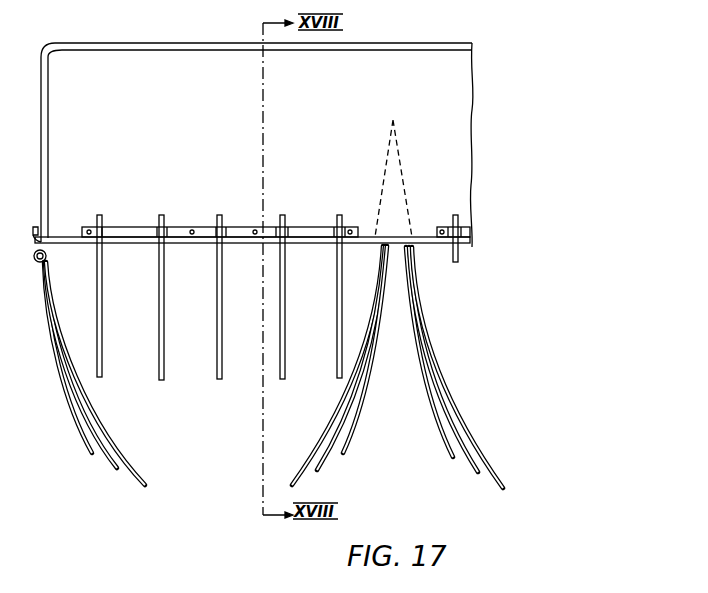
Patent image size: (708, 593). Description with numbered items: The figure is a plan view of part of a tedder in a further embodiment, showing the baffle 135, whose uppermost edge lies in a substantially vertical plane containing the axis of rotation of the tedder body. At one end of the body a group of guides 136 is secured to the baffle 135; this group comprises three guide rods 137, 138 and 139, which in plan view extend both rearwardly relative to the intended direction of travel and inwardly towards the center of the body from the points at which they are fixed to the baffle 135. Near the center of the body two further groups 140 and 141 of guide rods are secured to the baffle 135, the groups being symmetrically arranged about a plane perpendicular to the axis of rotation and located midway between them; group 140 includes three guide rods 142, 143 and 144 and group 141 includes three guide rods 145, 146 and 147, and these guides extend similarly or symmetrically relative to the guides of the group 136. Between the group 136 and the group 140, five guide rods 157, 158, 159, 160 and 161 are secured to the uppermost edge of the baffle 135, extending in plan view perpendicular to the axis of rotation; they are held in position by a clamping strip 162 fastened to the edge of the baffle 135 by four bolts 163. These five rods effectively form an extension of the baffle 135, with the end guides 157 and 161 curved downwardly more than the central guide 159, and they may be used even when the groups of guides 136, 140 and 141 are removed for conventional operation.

The baffle 135 is at (470, 158).
The group of guides 136 is at (114, 381).
The guide rod 137 is at (149, 486).
The guide rod 138 is at (118, 470).
The guide rod 139 is at (93, 455).
The group of guide rods 140 is at (327, 370).
The group of guide rods 141 is at (463, 382).
The guide rod 142 is at (300, 470).
The guide rod 143 is at (317, 471).
The guide rod 144 is at (346, 453).
The guide rod 145 is at (450, 458).
The guide rod 146 is at (478, 473).
The guide rod 147 is at (500, 491).
The guide rod 157 is at (101, 351).
The guide rod 158 is at (163, 351).
The guide rod 159 is at (221, 351).
The guide rod 160 is at (284, 351).
The guide rod 161 is at (337, 318).
The clamping strip 162 is at (313, 234).
The bolt 163 is at (191, 229).